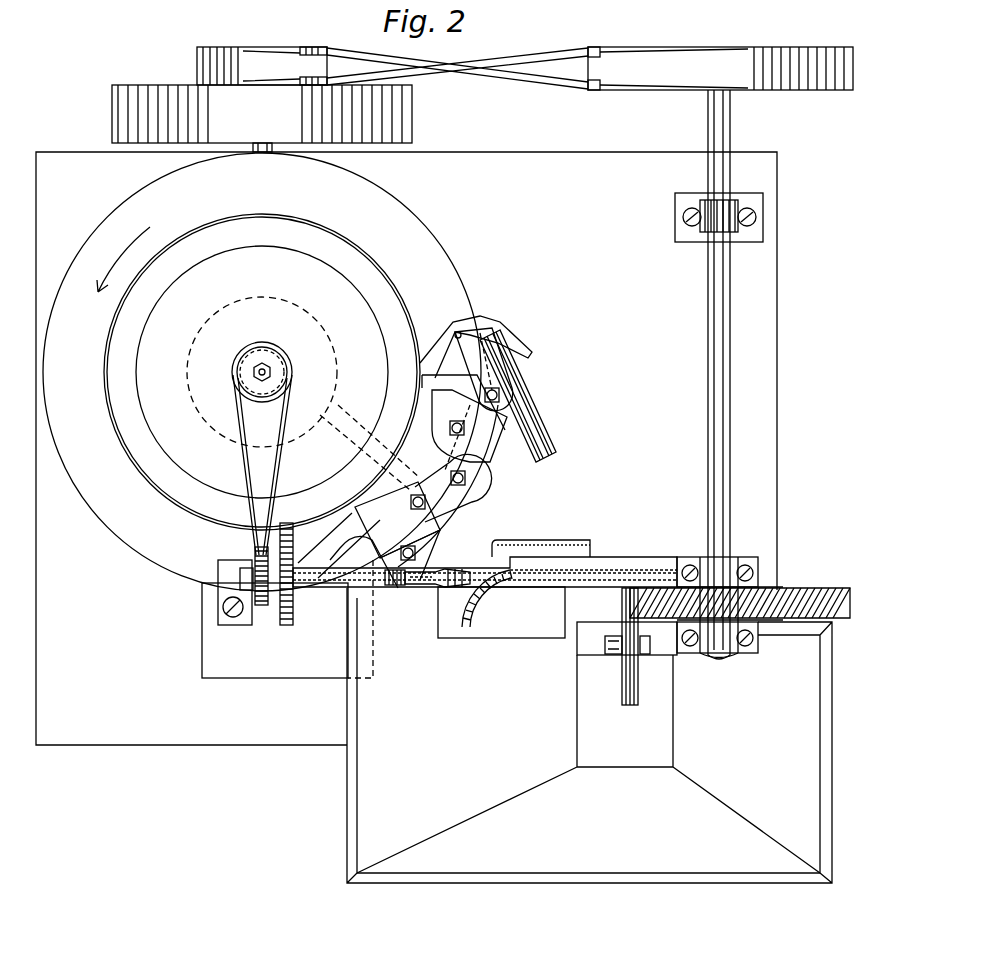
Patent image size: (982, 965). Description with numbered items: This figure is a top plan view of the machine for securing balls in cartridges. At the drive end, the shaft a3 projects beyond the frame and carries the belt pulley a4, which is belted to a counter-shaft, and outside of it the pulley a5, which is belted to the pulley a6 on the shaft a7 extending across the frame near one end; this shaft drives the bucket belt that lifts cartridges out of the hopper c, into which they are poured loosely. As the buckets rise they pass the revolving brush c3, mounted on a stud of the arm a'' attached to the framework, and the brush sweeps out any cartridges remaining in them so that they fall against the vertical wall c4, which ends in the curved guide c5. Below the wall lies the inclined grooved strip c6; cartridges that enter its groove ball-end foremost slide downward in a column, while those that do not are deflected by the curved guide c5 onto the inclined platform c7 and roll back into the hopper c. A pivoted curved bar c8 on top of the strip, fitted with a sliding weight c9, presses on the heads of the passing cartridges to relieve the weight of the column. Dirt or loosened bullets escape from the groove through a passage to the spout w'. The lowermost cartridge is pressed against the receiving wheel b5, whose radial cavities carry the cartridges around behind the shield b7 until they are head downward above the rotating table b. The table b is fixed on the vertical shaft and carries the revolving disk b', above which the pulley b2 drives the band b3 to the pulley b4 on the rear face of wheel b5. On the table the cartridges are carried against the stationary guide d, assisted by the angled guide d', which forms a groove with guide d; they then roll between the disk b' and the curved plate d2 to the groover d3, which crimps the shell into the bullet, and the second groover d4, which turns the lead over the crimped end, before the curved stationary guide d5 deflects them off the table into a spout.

The shaft a3 is at (263, 152).
The belt pulley a4 is at (412, 108).
The pulley a5 is at (312, 47).
The pulley a6 is at (655, 47).
The shaft a7 is at (738, 117).
The arm a'' is at (639, 657).
The table b is at (262, 372).
The revolving disk b' is at (262, 372).
The pulley b2 is at (282, 352).
The band b3 is at (285, 385).
The pulley b4 is at (240, 555).
The receiving wheel b5 is at (262, 605).
The shield b7 is at (300, 612).
The stationary guide d is at (385, 559).
The guide d' is at (359, 491).
The curved plate d2 is at (557, 420).
The groover d3 is at (440, 516).
The second groover d4 is at (476, 432).
The curved stationary guide d5 is at (530, 330).
The hopper c is at (598, 720).
The revolving brush c3 is at (638, 700).
The vertical wall c4 is at (645, 548).
The curved guide c5 is at (462, 605).
The grooved strip c6 is at (562, 595).
The inclined platform c7 is at (501, 612).
The curved bar c8 is at (430, 585).
The sliding weight c9 is at (395, 585).
The spout w' is at (541, 538).